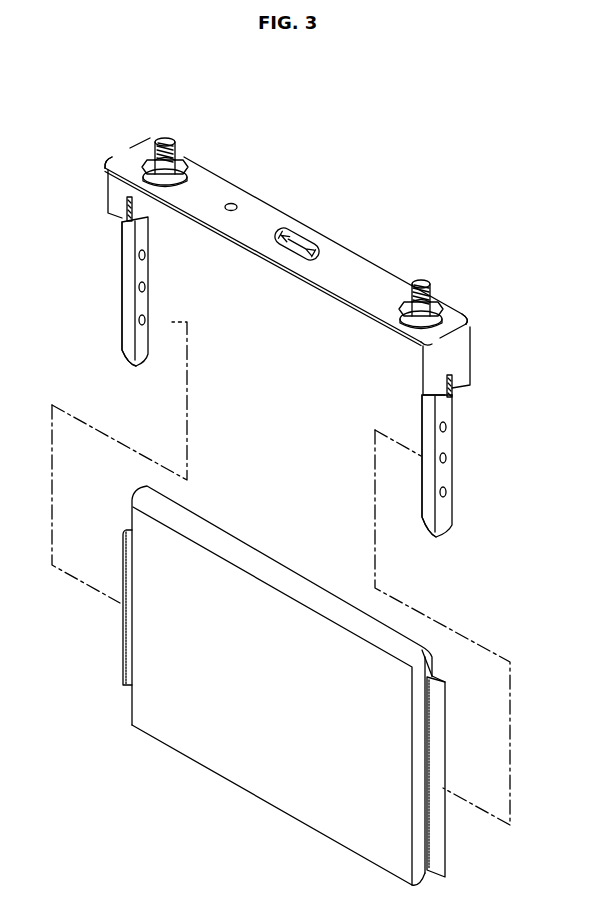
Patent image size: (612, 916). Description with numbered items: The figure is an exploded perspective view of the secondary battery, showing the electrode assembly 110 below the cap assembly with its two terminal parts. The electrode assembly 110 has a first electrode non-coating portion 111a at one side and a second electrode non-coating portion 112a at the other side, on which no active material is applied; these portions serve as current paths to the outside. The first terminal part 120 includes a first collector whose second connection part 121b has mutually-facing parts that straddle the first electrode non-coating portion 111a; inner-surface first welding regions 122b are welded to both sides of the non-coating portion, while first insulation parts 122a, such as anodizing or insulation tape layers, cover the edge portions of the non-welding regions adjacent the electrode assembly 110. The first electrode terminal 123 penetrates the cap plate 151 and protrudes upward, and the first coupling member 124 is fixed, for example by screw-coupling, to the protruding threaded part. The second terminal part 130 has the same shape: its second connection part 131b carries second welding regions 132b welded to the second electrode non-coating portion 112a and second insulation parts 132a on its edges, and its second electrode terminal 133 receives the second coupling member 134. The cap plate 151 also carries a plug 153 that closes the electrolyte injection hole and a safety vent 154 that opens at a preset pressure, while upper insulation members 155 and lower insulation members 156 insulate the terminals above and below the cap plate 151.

The electrode assembly 110 is at (282, 540).
The first electrode non-coating portion 111a is at (128, 637).
The second electrode non-coating portion 112a is at (427, 881).
The first terminal part 120 is at (163, 116).
The second connection part 121b is at (122, 258).
The first insulation parts 122a is at (140, 337).
The first welding regions 122b is at (146, 320).
The first electrode terminal 123 is at (170, 138).
The first coupling member 124 is at (180, 152).
The second terminal part 130 is at (410, 262).
The second connection part 131b is at (432, 421).
The second insulation parts 132a is at (428, 508).
The second welding regions 132b is at (447, 492).
The second electrode terminal 133 is at (422, 282).
The second coupling member 134 is at (440, 300).
The cap plate 151 is at (268, 212).
The plug 153 is at (233, 203).
The safety vent 154 is at (312, 236).
The upper insulation members 155 is at (218, 163).
The lower insulation members 156 is at (108, 176).